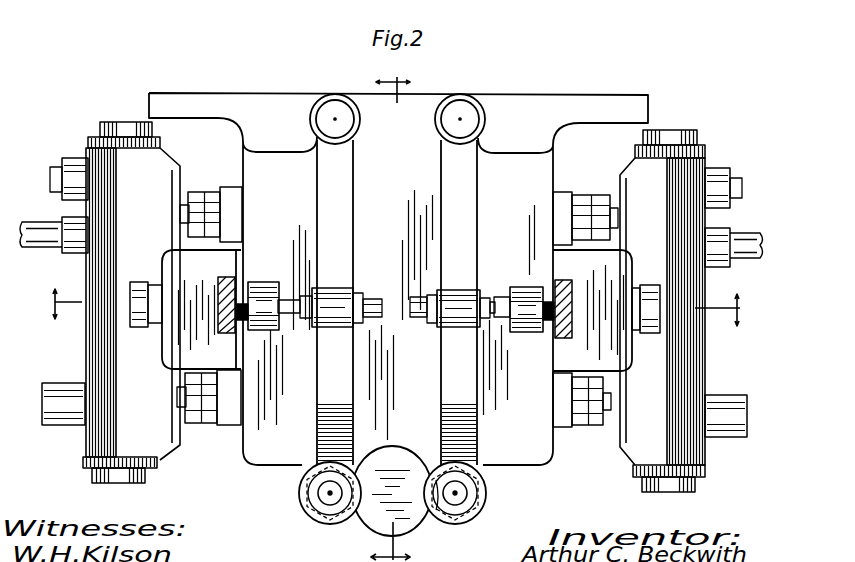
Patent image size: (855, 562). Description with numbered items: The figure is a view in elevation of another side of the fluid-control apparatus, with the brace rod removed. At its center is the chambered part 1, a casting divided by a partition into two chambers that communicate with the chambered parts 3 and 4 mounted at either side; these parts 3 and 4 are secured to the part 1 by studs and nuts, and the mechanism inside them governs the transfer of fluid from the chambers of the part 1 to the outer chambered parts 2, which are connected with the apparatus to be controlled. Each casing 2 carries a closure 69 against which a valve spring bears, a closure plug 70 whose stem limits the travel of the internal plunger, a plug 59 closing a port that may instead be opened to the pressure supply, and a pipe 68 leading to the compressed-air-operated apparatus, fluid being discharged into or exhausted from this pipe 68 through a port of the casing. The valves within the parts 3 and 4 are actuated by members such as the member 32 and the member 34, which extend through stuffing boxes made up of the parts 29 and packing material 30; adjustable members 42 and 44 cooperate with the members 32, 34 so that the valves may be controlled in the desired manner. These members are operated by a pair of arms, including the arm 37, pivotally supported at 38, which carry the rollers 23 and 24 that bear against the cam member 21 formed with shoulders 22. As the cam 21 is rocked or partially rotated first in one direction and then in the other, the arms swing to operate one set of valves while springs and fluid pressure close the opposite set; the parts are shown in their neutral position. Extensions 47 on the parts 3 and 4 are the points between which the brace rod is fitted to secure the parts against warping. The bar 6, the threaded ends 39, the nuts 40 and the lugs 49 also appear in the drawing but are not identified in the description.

The chambered part 1 is at (543, 464).
The chambered part 2 is at (83, 437).
The chambered part 3 is at (167, 338).
The chambered part 4 is at (390, 308).
The cross bar 6 is at (600, 96).
The cam member 21 is at (373, 518).
The shoulders 22 is at (443, 518).
The roller 23 is at (320, 515).
The roller 24 is at (470, 516).
The stuffing box part 29 is at (258, 283).
The packing material 30 is at (347, 242).
The member 32 is at (302, 297).
The member 34 is at (500, 300).
The arm 37 is at (447, 224).
The pivotal support 38 is at (330, 108).
The threaded end 39 is at (437, 427).
The nut 40 is at (318, 493).
The adjustable member 42 is at (375, 298).
The adjustable member 44 is at (418, 298).
The extension 47 is at (219, 291).
The lug 49 is at (237, 214).
The plug 59 is at (50, 180).
The pipe 68 is at (30, 249).
The closure 69 is at (102, 122).
The closure plug 70 is at (120, 483).